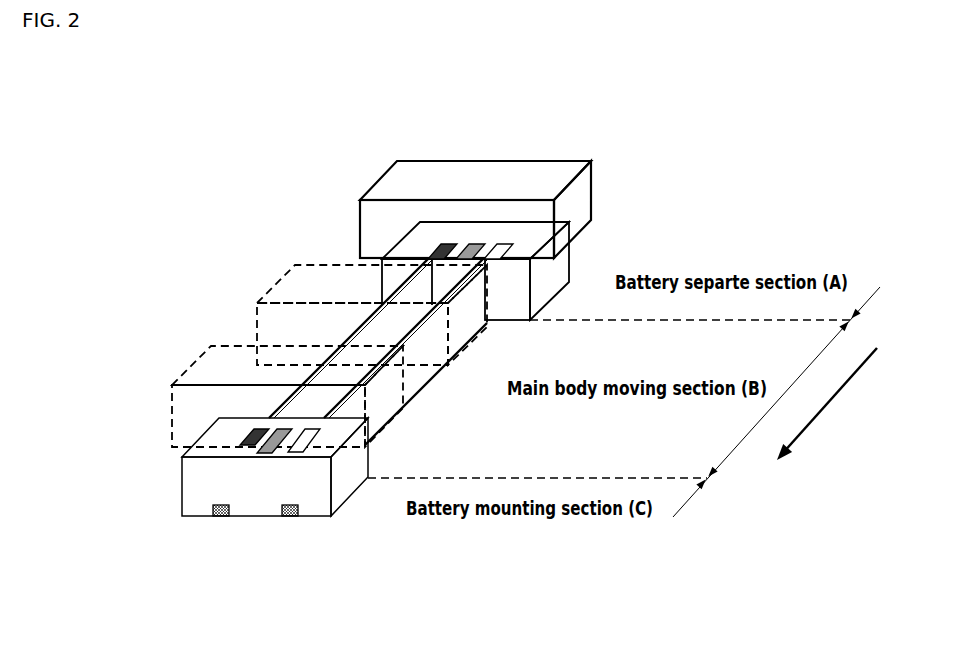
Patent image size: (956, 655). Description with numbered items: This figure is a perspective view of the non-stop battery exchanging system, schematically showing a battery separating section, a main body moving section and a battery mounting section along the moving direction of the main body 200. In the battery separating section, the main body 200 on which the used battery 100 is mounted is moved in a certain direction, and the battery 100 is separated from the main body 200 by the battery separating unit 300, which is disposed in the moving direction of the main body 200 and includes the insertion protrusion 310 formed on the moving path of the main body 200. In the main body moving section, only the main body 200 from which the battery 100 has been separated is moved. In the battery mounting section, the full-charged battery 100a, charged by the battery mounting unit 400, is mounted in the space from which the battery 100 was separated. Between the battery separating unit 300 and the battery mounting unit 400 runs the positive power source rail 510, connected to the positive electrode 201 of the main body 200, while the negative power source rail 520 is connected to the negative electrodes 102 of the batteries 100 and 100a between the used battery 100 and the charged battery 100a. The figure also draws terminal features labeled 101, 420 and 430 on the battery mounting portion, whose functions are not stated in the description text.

The battery 100 is at (562, 267).
The full-charged battery 100a is at (172, 483).
The first terminal 101 is at (257, 454).
The negative electrode 102 is at (291, 453).
The main body 200 is at (484, 176).
The positive electrode 201 is at (240, 445).
The battery separating unit 300 is at (342, 206).
The insertion protrusion 310 is at (445, 282).
The battery mounting unit 400 is at (165, 406).
The first contact terminal 420 is at (213, 515).
The second contact terminal 430 is at (303, 516).
The positive power source rail 510 is at (300, 374).
The negative power source rail 520 is at (428, 387).